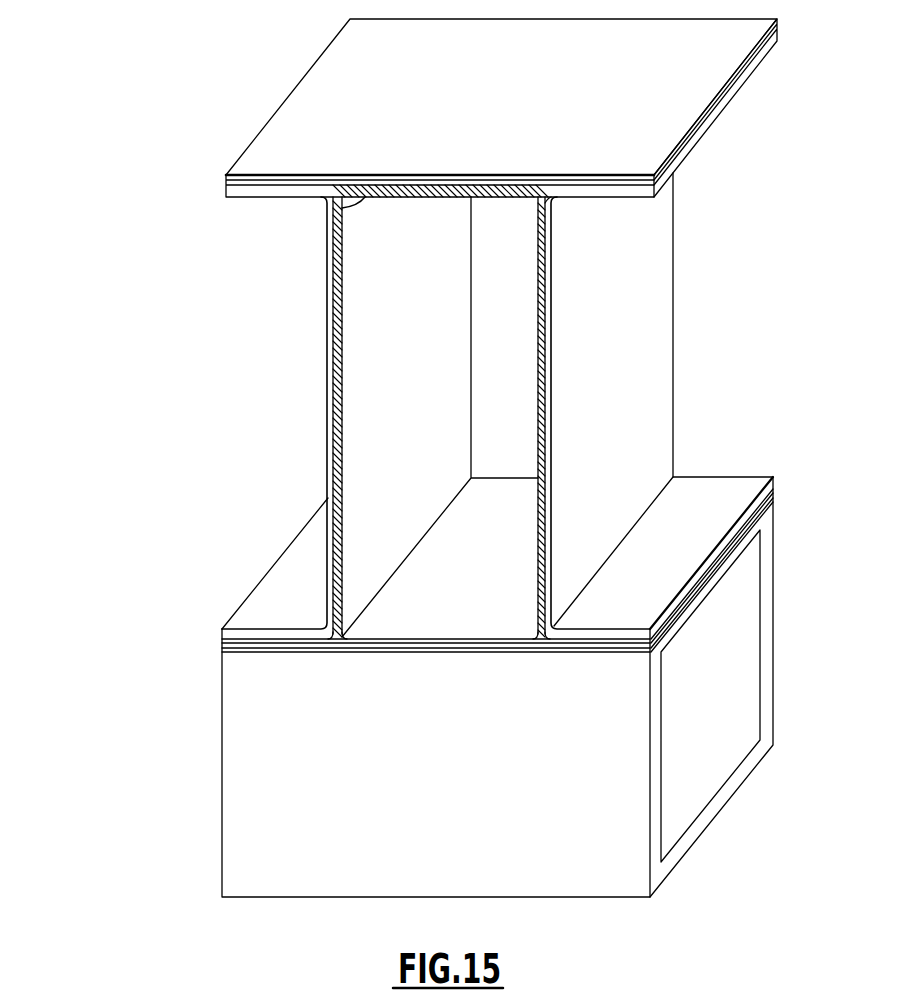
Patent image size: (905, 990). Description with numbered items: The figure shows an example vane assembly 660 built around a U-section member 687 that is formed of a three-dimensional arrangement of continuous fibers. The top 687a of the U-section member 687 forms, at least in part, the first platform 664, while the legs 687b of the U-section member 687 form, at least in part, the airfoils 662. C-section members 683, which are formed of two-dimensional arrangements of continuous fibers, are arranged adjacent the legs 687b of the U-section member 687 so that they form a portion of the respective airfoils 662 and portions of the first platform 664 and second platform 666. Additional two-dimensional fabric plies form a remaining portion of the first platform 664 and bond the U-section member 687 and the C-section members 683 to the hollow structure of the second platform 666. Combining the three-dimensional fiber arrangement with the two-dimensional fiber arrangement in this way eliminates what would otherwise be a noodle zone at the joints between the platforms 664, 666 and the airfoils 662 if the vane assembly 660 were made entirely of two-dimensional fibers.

The vane assembly 660 is at (417, 458).
The airfoils 662 is at (328, 412).
The first platform 664 is at (706, 119).
The second platform 666 is at (655, 828).
The C-section members 683 is at (328, 298).
The U-section member 687 is at (352, 312).
The top of the U-section member 687a is at (364, 200).
The legs of the U-section member 687b is at (349, 507).